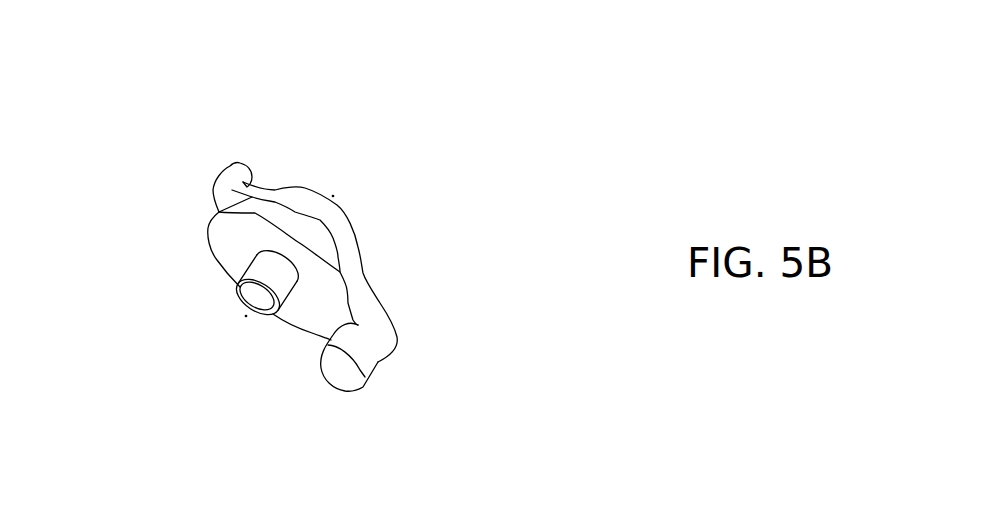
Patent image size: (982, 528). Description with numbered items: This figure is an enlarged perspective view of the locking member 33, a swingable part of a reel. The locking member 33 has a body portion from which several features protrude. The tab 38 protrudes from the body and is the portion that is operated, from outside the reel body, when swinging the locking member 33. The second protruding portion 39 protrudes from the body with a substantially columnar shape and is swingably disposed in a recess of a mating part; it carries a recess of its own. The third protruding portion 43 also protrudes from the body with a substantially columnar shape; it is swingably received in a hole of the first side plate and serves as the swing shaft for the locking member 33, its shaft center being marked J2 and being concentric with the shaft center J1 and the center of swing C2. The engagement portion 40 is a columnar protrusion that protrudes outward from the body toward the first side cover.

The locking member 33 is at (170, 190).
The engagement portion 40 is at (241, 175).
The second protruding portion 39 is at (345, 220).
The third protruding portion 43 is at (213, 250).
The tab 38 is at (363, 360).